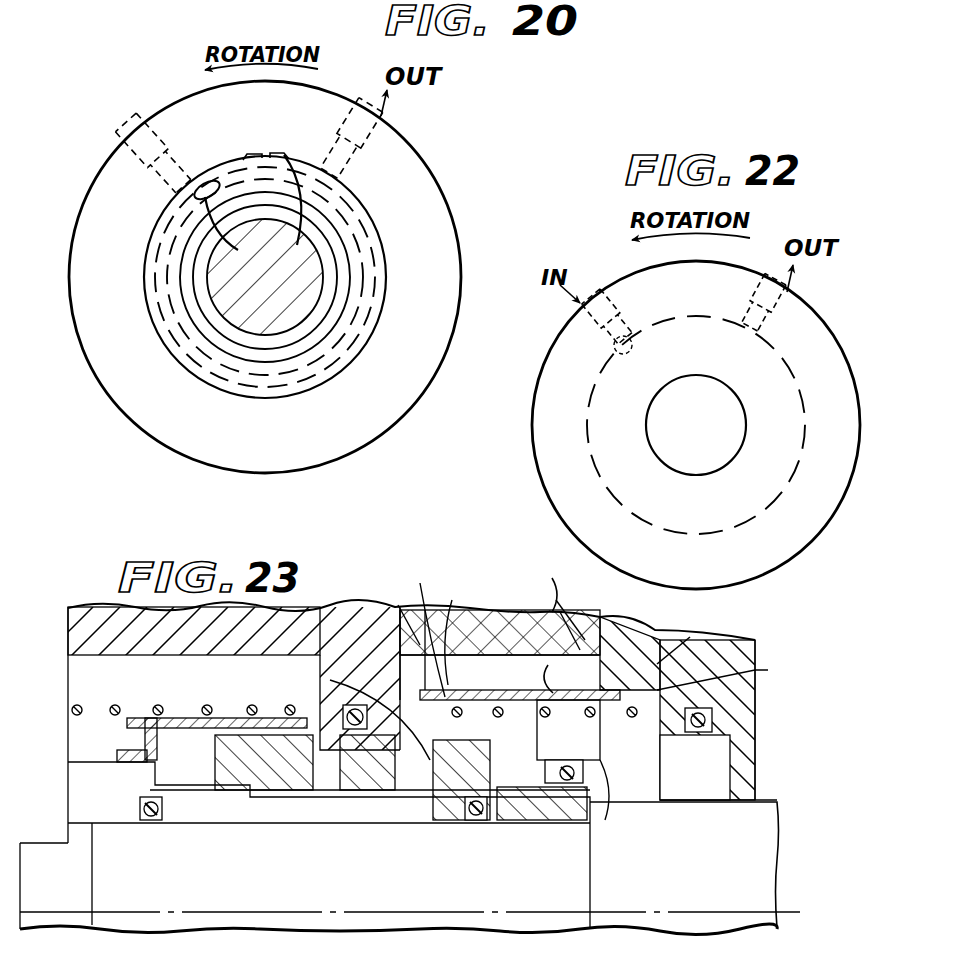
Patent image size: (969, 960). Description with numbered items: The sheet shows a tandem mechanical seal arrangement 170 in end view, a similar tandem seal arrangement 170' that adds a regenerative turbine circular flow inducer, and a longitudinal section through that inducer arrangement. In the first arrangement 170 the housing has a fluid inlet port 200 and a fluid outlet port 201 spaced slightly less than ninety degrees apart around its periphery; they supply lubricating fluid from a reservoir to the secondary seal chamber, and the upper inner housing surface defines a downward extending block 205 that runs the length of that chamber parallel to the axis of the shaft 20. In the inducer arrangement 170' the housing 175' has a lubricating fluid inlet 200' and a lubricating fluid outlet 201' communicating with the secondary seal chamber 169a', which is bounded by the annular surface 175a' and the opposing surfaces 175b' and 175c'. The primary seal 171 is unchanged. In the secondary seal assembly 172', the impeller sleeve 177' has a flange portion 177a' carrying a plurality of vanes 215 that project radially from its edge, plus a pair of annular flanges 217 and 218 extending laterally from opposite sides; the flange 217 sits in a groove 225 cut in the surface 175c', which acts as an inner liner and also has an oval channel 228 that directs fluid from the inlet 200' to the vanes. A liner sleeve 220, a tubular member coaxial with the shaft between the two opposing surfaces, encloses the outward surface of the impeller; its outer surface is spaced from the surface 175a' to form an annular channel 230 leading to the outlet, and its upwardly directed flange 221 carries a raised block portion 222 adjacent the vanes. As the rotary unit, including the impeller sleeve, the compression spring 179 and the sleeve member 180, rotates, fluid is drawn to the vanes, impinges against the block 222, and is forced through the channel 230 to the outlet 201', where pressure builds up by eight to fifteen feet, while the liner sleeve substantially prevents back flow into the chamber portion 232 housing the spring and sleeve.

In FIG. 20, the shaft 20 is at (265, 277).
In FIG. 23, the shaft 20 is at (684, 865).
In FIG. 20, the tandem seal arrangement 170 is at (291, 277).
In FIG. 22, the tandem seal arrangement 170' is at (708, 425).
In FIG. 23, the tandem seal arrangement 170' is at (410, 901).
In FIG. 23, the primary seal assembly 171 is at (212, 836).
In FIG. 23, the secondary seal assembly 172' is at (329, 862).
In FIG. 20, the housing 175' is at (338, 275).
In FIG. 22, the housing 175' is at (696, 391).
In FIG. 23, the housing 175' is at (377, 713).
In FIG. 23, the annular surface 175a' is at (677, 697).
In FIG. 23, the opposing surface 175b' is at (742, 675).
In FIG. 23, the inner surface 175c' is at (375, 741).
In FIG. 23, the impeller sleeve 177' is at (370, 795).
In FIG. 23, the flange portion 177a' is at (509, 796).
In FIG. 20, the compression spring 179 is at (235, 216).
In FIG. 23, the compression spring 179 is at (659, 651).
In FIG. 23, the sleeve member 180 is at (626, 797).
In FIG. 23, the secondary seal chamber 169a' is at (721, 709).
In FIG. 20, the fluid inlet port 200 is at (131, 144).
In FIG. 22, the lubricating fluid inlet 200' is at (573, 321).
In FIG. 20, the fluid outlet port 201 is at (392, 138).
In FIG. 22, the lubricating fluid outlet 201' is at (807, 299).
In FIG. 23, the lubricating fluid outlet 201' is at (508, 644).
In FIG. 20, the block 205 is at (265, 271).
In FIG. 23, the vanes 215 is at (442, 629).
In FIG. 23, the annular flange 217 is at (394, 613).
In FIG. 23, the annular flange 218 is at (455, 693).
In FIG. 23, the liner sleeve 220 is at (546, 604).
In FIG. 23, the flange 221 is at (544, 619).
In FIG. 23, the raised block portion 222 is at (468, 635).
In FIG. 23, the groove 225 is at (402, 690).
In FIG. 23, the oval channel 228 is at (393, 700).
In FIG. 23, the annular channel 230 is at (572, 686).
In FIG. 23, the inner seal chamber portion 232 is at (547, 741).